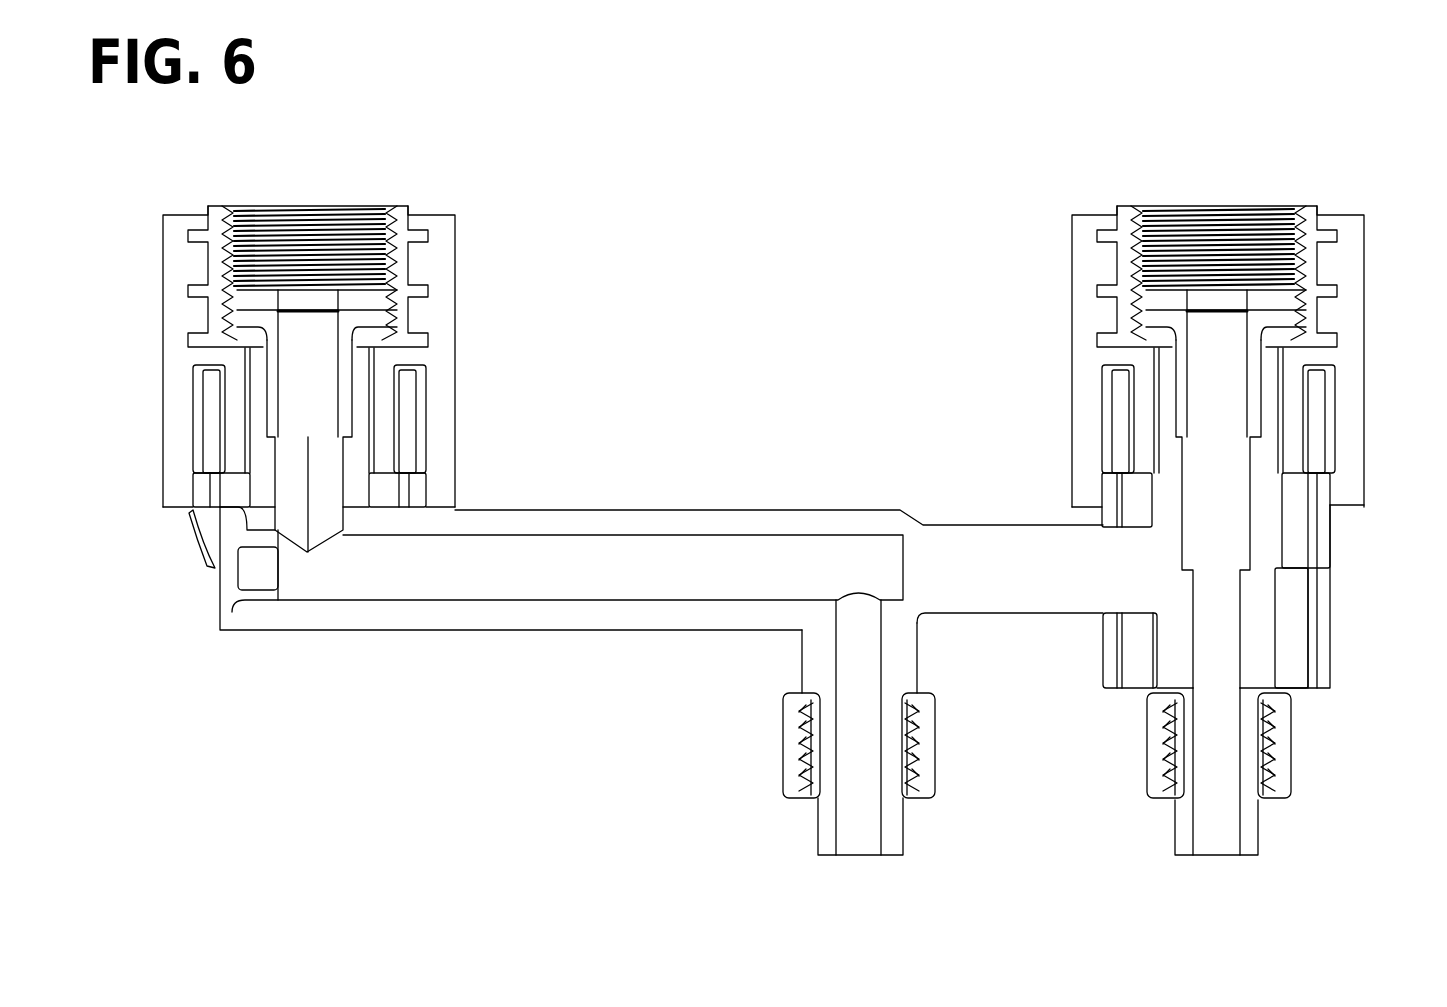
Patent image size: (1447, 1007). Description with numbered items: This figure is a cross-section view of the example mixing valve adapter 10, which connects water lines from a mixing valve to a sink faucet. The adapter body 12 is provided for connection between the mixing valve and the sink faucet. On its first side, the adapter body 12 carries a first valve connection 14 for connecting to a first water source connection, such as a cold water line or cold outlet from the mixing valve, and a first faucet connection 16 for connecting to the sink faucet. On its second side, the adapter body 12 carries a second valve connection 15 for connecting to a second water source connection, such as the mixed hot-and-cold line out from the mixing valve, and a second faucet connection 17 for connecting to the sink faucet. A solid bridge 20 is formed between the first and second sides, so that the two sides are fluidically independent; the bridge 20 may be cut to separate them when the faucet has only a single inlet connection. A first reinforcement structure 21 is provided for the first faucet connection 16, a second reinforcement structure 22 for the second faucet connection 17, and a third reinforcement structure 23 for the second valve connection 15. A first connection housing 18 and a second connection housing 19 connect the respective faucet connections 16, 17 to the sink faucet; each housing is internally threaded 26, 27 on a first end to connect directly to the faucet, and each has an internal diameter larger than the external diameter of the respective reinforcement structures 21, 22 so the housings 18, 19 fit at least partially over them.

The mixing valve adapter 10 is at (558, 161).
The adapter body 12 is at (503, 632).
The first valve connection 14 is at (822, 800).
The second valve connection 15 is at (1258, 810).
The first faucet connection 16 is at (342, 478).
The second faucet connection 17 is at (1253, 472).
The first connection housing 18 is at (480, 273).
The second connection housing 19 is at (1020, 270).
The solid bridge 20 is at (1000, 518).
The first reinforcement structure 21 is at (210, 558).
The second reinforcement structure 22 is at (1332, 550).
The third reinforcement structure 23 is at (1332, 650).
The internal thread 26 is at (310, 225).
The internal thread 27 is at (1183, 225).